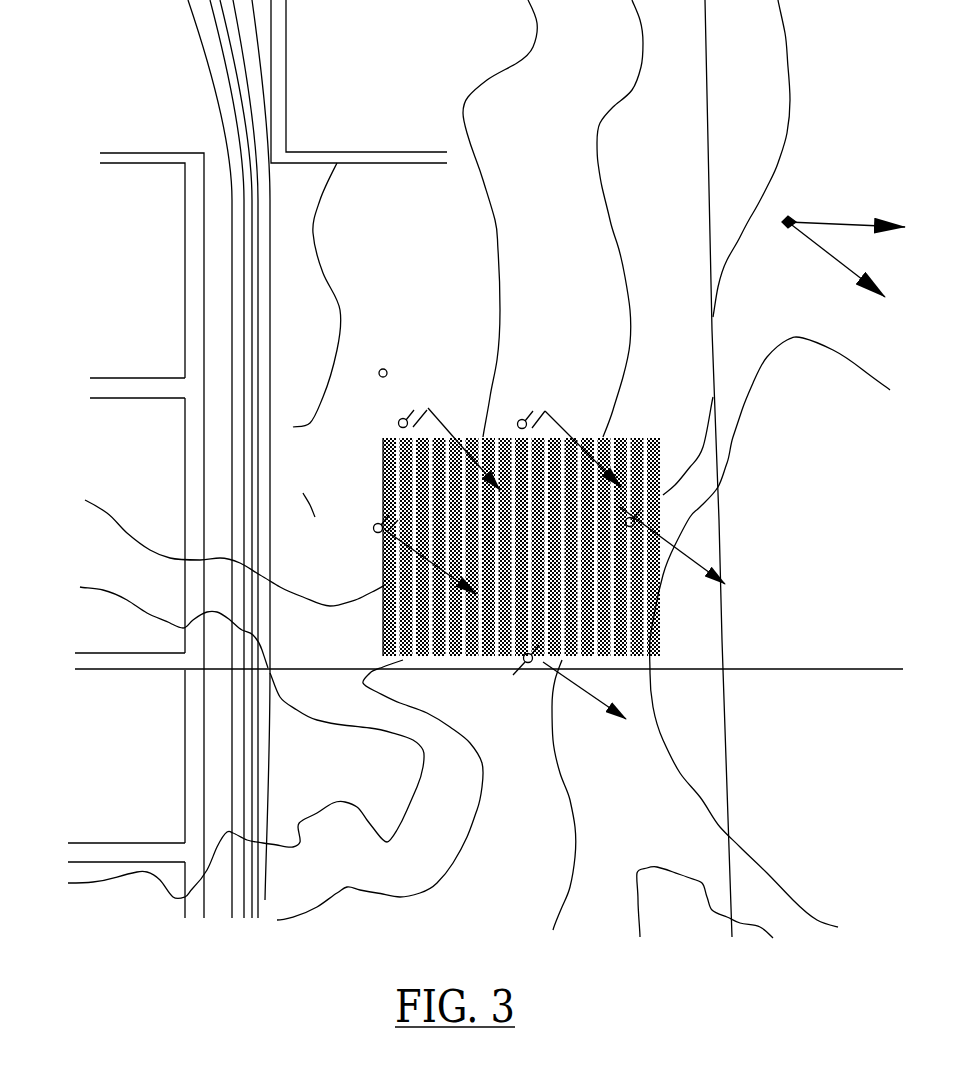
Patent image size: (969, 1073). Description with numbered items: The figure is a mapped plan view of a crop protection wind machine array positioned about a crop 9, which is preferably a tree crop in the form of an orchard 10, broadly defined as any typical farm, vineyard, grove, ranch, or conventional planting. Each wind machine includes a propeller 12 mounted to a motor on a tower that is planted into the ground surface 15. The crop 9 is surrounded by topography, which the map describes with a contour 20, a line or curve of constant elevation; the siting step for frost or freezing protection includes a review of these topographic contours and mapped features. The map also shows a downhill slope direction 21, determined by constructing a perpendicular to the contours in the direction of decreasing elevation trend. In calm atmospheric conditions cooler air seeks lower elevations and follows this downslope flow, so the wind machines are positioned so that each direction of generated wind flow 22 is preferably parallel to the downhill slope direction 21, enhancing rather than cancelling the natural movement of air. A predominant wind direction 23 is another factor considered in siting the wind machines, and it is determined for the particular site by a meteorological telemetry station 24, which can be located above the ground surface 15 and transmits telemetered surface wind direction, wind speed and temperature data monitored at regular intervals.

The crop 9 is at (678, 619).
The orchard 10 is at (529, 516).
The propeller 12 is at (384, 440).
The ground surface 15 is at (318, 582).
The contour 20 is at (603, 167).
The downhill slope direction 21 is at (853, 221).
The direction of generated wind flow 22 is at (452, 438).
The predominant wind direction 23 is at (855, 277).
The meteorological telemetry station 24 is at (380, 378).